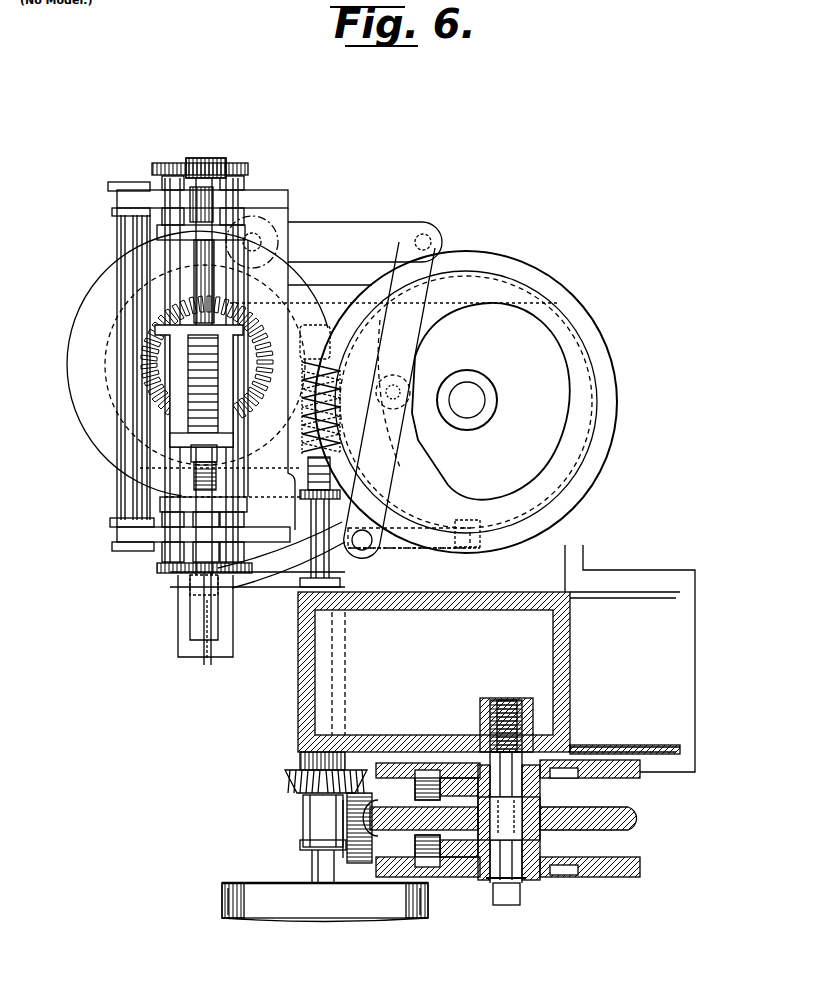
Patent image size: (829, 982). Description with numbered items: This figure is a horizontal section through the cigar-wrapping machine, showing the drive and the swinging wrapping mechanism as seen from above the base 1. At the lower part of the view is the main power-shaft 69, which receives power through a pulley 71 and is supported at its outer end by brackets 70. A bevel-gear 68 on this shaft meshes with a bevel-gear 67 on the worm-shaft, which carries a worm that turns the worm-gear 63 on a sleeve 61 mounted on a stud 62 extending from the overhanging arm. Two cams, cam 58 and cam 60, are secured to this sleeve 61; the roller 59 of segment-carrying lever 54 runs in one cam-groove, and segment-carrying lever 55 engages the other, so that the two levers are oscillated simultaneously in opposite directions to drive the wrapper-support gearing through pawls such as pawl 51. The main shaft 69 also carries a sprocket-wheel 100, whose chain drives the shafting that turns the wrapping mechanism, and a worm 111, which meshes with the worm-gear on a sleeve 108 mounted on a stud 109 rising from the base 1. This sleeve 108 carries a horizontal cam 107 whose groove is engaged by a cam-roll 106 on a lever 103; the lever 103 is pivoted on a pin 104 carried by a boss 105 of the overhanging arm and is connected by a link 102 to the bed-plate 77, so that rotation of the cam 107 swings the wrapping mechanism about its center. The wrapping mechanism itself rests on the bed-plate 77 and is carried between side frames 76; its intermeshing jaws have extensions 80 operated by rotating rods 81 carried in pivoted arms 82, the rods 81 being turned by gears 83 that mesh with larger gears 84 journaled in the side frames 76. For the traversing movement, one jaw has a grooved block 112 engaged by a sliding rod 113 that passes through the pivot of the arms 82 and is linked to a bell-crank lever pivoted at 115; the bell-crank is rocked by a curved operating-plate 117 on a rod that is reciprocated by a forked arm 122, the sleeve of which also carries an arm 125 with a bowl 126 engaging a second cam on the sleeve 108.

The base 1 is at (688, 672).
The pawl 51 is at (415, 852).
The segment-carrying lever 54 is at (442, 790).
The segment-carrying lever 55 is at (442, 852).
The cam 58 is at (630, 877).
The roller 59 is at (415, 788).
The cam 60 is at (636, 778).
The sleeve 61 is at (540, 800).
The stud 62 is at (494, 882).
The worm-gear 63 is at (642, 819).
The bevel-gear 67 is at (357, 837).
The bevel-gear 68 is at (288, 778).
The shaft 69 is at (312, 859).
The brackets 70 is at (305, 817).
The pulley 71 is at (325, 902).
The side frames 76 is at (120, 533).
The bed-plate 77 is at (76, 352).
The extensions 80 is at (240, 338).
The rotating rods 81 is at (232, 276).
The arms 82 is at (180, 497).
The gears 83 is at (160, 567).
The gears 84 is at (205, 158).
The sprocket-wheel 100 is at (336, 493).
The link 102 is at (365, 253).
The lever 103 is at (432, 268).
The pin 104 is at (376, 540).
The boss 105 is at (360, 554).
The cam-roll 106 is at (410, 385).
The horizontal cam 107 is at (598, 310).
The sleeve 108 is at (497, 398).
The stud 109 is at (467, 400).
The worm 111 is at (336, 390).
The grooved block 112 is at (216, 452).
The sliding rod 113 is at (204, 608).
The pivot 115 is at (228, 646).
The curved operating-plate 117 is at (281, 555).
The forked arm 122 is at (287, 580).
The arm 125 is at (467, 553).
The bowl 126 is at (480, 525).